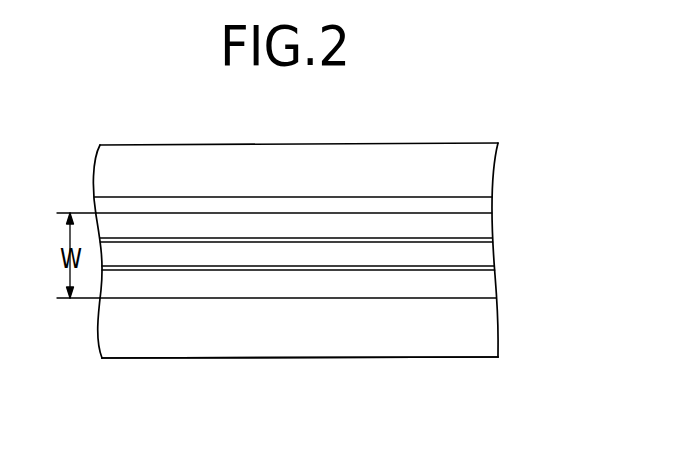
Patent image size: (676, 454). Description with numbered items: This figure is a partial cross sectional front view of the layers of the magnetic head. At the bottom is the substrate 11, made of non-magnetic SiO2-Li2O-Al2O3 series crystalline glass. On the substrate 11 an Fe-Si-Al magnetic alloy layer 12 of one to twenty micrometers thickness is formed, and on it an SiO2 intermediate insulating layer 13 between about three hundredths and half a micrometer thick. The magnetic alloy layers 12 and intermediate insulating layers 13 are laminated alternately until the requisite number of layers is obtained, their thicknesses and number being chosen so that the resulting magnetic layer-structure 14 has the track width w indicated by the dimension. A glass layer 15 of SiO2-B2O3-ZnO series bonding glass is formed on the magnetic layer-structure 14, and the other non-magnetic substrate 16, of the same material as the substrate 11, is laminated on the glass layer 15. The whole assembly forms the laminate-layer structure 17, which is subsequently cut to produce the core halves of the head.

The substrate 11 is at (478, 345).
The magnetic alloy layer 12 is at (476, 220).
The intermediate insulating layer 13 is at (493, 240).
The magnetic layer-structure 14 is at (577, 172).
The glass layer 15 is at (468, 200).
The non-magnetic substrate 16 is at (463, 152).
The laminate-layer structure 17 is at (52, 143).